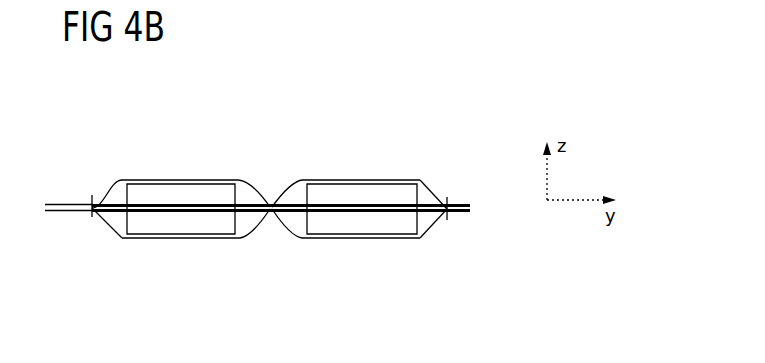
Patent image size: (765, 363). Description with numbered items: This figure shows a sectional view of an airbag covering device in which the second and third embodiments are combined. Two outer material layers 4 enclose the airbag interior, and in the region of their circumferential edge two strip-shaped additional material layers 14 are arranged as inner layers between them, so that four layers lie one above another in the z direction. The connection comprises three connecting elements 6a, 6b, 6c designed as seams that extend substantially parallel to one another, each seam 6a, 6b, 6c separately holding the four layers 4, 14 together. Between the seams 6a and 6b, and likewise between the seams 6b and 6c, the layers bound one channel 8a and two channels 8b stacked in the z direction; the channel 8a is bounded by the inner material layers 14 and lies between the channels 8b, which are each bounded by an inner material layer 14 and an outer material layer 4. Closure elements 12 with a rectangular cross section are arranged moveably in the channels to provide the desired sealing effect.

The material layers 4 is at (61, 201).
The closure elements 12 is at (163, 215).
The additional material layers 14 is at (122, 238).
The connecting element 6a is at (92, 215).
The connecting element 6b is at (273, 192).
The connecting element 6c is at (450, 218).
The channel 8a is at (185, 183).
The channels 8b is at (240, 185).